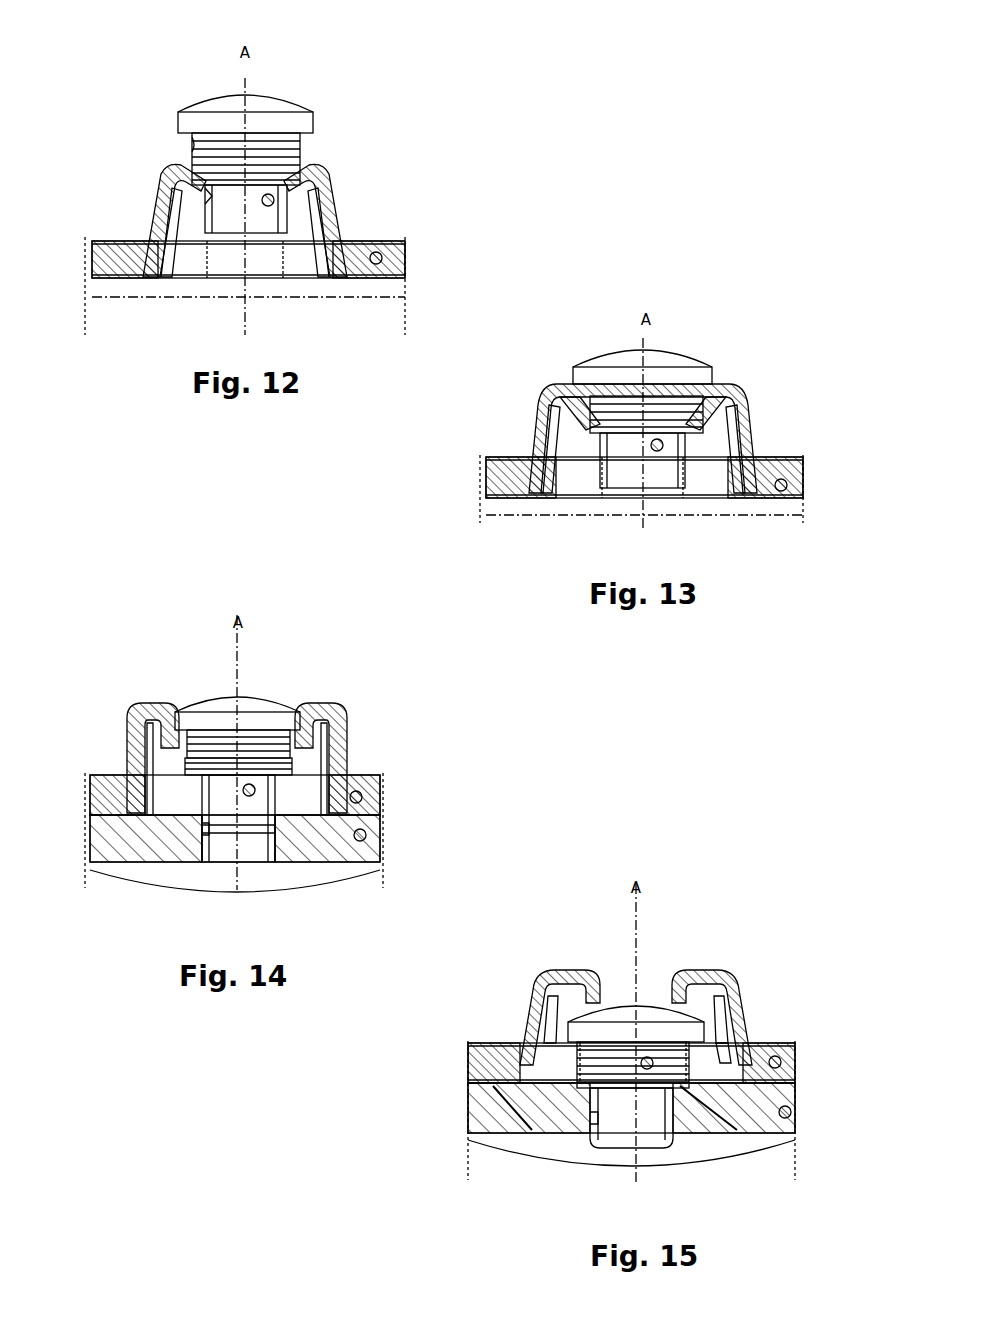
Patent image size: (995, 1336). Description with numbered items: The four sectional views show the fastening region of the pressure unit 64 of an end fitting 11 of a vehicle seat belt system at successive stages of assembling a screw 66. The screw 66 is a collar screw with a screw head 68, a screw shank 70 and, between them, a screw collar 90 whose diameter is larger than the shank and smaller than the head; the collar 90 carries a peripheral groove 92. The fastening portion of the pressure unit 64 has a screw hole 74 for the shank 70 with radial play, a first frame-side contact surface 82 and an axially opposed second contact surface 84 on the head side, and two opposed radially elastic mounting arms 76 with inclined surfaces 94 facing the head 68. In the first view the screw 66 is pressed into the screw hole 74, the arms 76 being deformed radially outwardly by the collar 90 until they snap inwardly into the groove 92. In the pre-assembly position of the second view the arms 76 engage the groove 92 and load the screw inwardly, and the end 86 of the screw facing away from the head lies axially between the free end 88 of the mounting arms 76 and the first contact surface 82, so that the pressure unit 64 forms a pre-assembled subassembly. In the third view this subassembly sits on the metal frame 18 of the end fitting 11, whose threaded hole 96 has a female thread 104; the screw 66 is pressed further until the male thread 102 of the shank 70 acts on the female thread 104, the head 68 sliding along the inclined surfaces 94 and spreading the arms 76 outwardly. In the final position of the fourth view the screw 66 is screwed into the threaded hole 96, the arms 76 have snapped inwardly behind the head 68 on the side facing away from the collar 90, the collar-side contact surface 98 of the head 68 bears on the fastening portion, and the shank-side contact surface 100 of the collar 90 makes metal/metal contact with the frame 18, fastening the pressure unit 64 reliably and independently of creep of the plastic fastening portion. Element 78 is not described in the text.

In FIG. 14, the end fitting 11 is at (250, 883).
In FIG. 15, the end fitting 11 is at (614, 1144).
In FIG. 14, the frame 18 is at (378, 840).
In FIG. 15, the frame 18 is at (787, 1112).
In FIG. 12, the pressure unit 64 is at (307, 143).
In FIG. 13, the pressure unit 64 is at (683, 415).
In FIG. 14, the pressure unit 64 is at (241, 716).
In FIG. 15, the pressure unit 64 is at (652, 1038).
In FIG. 12, the screw 66 is at (284, 121).
In FIG. 13, the screw 66 is at (685, 381).
In FIG. 14, the screw 66 is at (295, 716).
In FIG. 15, the screw 66 is at (614, 1038).
In FIG. 12, the screw head 68 is at (282, 120).
In FIG. 13, the screw head 68 is at (665, 360).
In FIG. 14, the screw head 68 is at (273, 707).
In FIG. 15, the screw head 68 is at (621, 1034).
In FIG. 12, the screw shank 70 is at (306, 160).
In FIG. 13, the screw shank 70 is at (727, 407).
In FIG. 14, the screw shank 70 is at (293, 748).
In FIG. 15, the screw shank 70 is at (619, 1134).
In FIG. 12, the screw hole 74 is at (248, 273).
In FIG. 13, the screw hole 74 is at (653, 483).
In FIG. 14, the screw hole 74 is at (263, 827).
In FIG. 15, the screw hole 74 is at (640, 1111).
In FIG. 12, the mounting arms 76 is at (241, 214).
In FIG. 13, the mounting arms 76 is at (663, 473).
In FIG. 14, the mounting arms 76 is at (207, 728).
In FIG. 15, the mounting arms 76 is at (652, 1051).
In FIG. 12, the plate section 78 is at (401, 238).
In FIG. 13, the plate section 78 is at (801, 456).
In FIG. 14, the plate section 78 is at (388, 778).
In FIG. 15, the plate section 78 is at (798, 1050).
In FIG. 12, the first frame-side contact surface 82 is at (112, 284).
In FIG. 13, the first frame-side contact surface 82 is at (508, 503).
In FIG. 15, the first frame-side contact surface 82 is at (503, 1088).
In FIG. 12, the second contact surface 84 is at (110, 240).
In FIG. 13, the second contact surface 84 is at (508, 457).
In FIG. 15, the second contact surface 84 is at (503, 1049).
In FIG. 12, the end of the screw 86 is at (233, 244).
In FIG. 13, the end of the screw 86 is at (627, 503).
In FIG. 15, the end of the screw 86 is at (654, 1160).
In FIG. 13, the free end of the mounting arms 88 is at (582, 410).
In FIG. 15, the free end of the mounting arms 88 is at (668, 1003).
In FIG. 12, the screw collar 90 is at (192, 147).
In FIG. 14, the screw collar 90 is at (224, 741).
In FIG. 15, the screw collar 90 is at (737, 1007).
In FIG. 12, the groove 92 is at (303, 157).
In FIG. 13, the groove 92 is at (674, 412).
In FIG. 14, the groove 92 is at (238, 752).
In FIG. 12, the inclined surfaces 94 is at (152, 186).
In FIG. 15, the inclined surfaces 94 is at (680, 998).
In FIG. 14, the threaded hole 96 is at (259, 867).
In FIG. 15, the contact surface of the screw head 98 is at (724, 1094).
In FIG. 15, the contact surface of the screw collar 100 is at (680, 1108).
In FIG. 12, the male thread 102 is at (207, 212).
In FIG. 15, the male thread 102 is at (589, 1114).
In FIG. 14, the female thread 104 is at (206, 824).